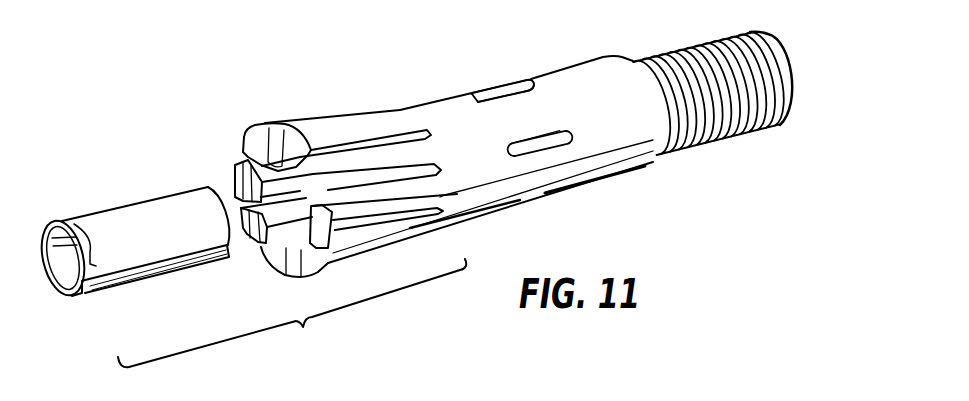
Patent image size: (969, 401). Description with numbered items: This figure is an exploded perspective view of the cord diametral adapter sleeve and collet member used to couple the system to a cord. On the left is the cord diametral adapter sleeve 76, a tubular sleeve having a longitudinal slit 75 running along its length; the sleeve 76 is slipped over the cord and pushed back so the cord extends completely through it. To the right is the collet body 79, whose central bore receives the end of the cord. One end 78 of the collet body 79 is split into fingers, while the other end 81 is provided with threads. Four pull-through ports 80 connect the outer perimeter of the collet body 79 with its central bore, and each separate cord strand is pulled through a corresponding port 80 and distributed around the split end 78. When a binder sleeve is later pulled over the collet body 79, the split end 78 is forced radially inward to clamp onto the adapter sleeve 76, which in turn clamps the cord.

The longitudinal slit 75 is at (124, 268).
The cord diametral adapter sleeve 76 is at (163, 208).
The split end of collet body 78 is at (327, 132).
The collet body 79 is at (513, 142).
The pull-through ports 80 is at (570, 130).
The threaded end of collet body 81 is at (678, 55).